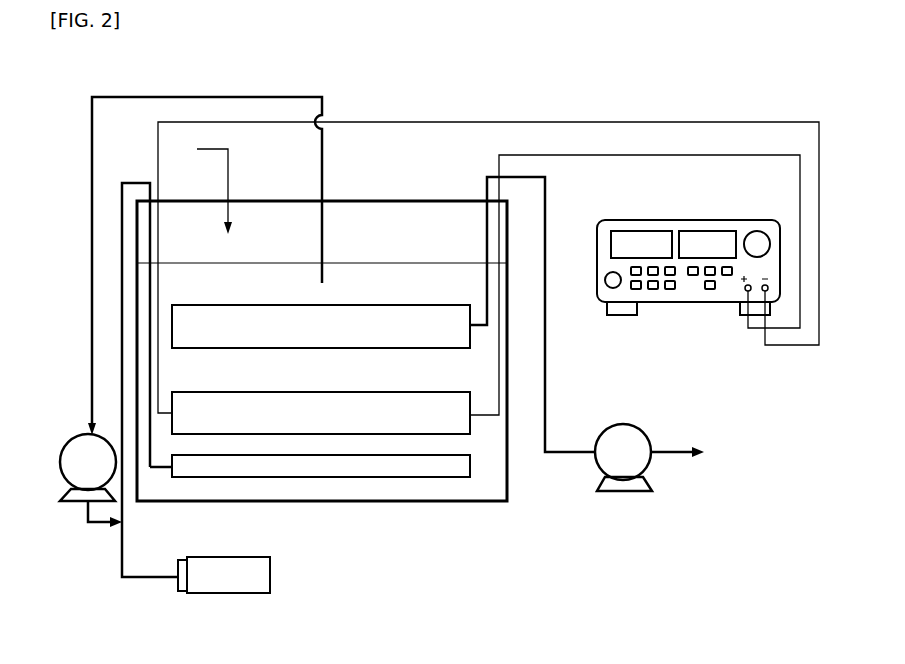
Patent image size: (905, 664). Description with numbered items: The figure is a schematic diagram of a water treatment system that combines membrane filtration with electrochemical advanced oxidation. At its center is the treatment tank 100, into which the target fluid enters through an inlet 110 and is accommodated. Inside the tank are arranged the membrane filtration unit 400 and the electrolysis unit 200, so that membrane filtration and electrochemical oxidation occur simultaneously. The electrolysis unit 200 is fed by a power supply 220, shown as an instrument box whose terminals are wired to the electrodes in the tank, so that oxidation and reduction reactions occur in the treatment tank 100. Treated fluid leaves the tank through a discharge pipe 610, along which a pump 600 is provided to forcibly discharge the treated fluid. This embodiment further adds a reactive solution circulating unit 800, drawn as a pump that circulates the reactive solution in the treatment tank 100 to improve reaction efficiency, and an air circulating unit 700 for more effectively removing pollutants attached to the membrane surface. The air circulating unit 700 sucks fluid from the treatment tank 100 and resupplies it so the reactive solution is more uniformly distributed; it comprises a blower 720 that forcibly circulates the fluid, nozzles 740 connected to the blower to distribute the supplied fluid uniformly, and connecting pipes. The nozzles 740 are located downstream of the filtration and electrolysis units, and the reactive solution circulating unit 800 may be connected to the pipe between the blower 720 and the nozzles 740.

The treatment tank 100 is at (482, 503).
The inlet 110 is at (210, 150).
The electrolysis unit 200 is at (349, 392).
The power supply 220 is at (688, 303).
The membrane filtration unit 400 is at (348, 305).
The pump 600 is at (623, 424).
The discharge pipe 610 is at (547, 218).
The air circulating unit 700 is at (265, 403).
The blower 720 is at (260, 584).
The nozzles 740 is at (352, 467).
The reactive solution circulating unit 800 is at (77, 503).